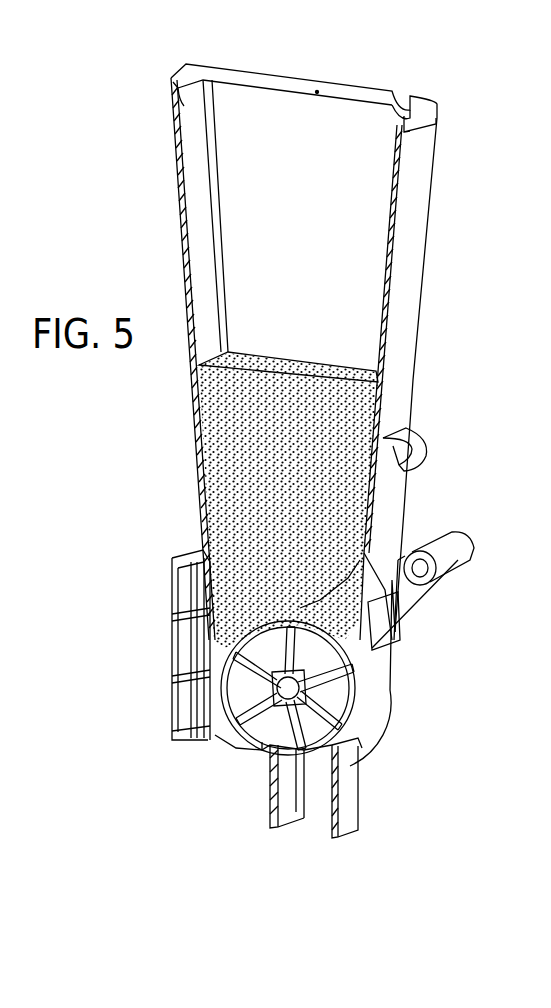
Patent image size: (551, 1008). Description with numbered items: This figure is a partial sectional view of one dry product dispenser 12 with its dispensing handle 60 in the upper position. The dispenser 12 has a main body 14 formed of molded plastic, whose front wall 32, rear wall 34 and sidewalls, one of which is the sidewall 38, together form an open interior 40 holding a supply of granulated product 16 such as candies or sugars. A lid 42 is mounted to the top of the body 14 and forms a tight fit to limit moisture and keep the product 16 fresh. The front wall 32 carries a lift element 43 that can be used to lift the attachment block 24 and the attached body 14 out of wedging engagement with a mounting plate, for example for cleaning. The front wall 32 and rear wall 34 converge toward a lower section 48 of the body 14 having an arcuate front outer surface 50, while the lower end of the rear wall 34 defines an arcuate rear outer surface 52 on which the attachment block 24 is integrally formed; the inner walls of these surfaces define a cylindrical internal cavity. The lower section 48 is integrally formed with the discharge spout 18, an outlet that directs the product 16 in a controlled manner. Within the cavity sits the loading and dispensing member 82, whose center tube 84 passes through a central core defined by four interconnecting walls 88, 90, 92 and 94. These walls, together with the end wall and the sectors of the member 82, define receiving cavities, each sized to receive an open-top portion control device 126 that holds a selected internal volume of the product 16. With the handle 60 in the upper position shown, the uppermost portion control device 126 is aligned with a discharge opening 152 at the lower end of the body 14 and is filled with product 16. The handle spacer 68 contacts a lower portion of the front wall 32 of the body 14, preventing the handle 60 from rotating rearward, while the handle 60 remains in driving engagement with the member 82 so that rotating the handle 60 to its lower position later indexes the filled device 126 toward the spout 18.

The dry product dispenser 12 is at (398, 74).
The main body 14 is at (420, 333).
The granulated product 16 is at (292, 404).
The discharge spout 18 is at (350, 802).
The attachment block 24 is at (197, 556).
The front wall 32 is at (412, 214).
The rear wall 34 is at (202, 242).
The sidewall 38 is at (312, 232).
The open interior 40 is at (250, 128).
The lid 42 is at (373, 88).
The lift element 43 is at (410, 446).
The lower section 48 is at (393, 720).
The arcuate front outer surface 50 is at (367, 728).
The arcuate rear outer surface 52 is at (218, 730).
The dispensing handle 60 is at (470, 548).
The spacer 68 is at (390, 617).
The loading and dispensing member 82 is at (340, 750).
The center tube 84 is at (254, 730).
The interconnecting wall 88 is at (300, 640).
The interconnecting wall 90 is at (330, 678).
The interconnecting wall 92 is at (303, 730).
The interconnecting wall 94 is at (265, 680).
The portion control device 126 is at (240, 692).
The discharge opening 152 is at (300, 605).